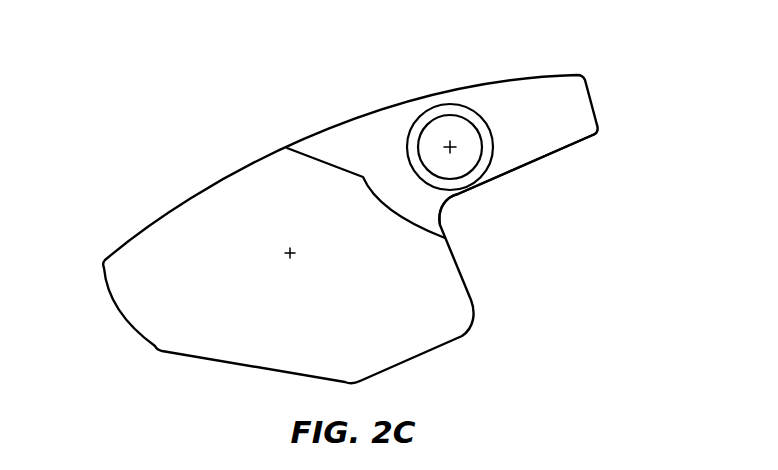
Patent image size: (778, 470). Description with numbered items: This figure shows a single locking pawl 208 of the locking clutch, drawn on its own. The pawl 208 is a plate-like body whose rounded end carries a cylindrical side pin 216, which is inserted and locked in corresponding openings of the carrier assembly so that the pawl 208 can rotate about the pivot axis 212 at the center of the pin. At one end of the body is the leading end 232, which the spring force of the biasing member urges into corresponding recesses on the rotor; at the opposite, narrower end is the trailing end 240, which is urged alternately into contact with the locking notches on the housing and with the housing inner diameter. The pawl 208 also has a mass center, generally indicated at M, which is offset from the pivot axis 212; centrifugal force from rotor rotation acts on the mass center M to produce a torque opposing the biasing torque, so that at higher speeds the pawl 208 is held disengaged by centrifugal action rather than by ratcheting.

The locking pawl 208 is at (286, 332).
The pivot axis 212 is at (453, 142).
The cylindrical side pin 216 is at (492, 158).
The leading end 232 is at (121, 314).
The trailing end 240 is at (593, 100).
The mass center M is at (288, 250).